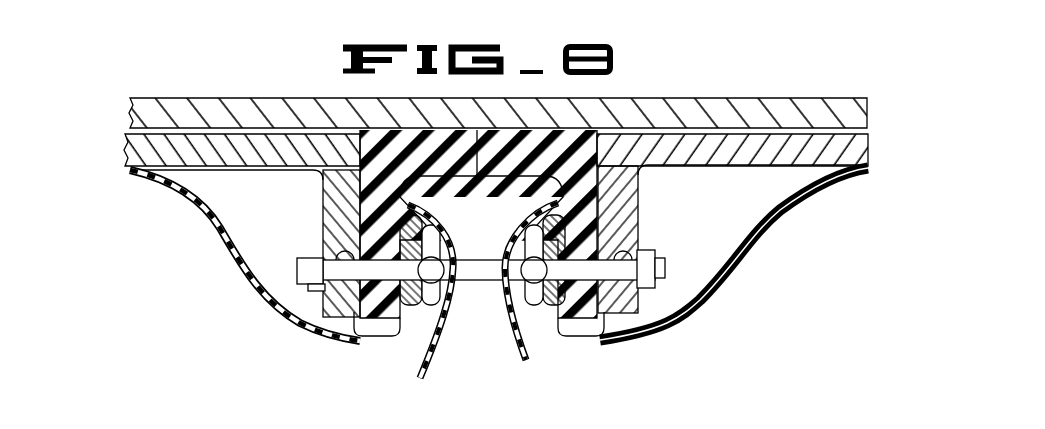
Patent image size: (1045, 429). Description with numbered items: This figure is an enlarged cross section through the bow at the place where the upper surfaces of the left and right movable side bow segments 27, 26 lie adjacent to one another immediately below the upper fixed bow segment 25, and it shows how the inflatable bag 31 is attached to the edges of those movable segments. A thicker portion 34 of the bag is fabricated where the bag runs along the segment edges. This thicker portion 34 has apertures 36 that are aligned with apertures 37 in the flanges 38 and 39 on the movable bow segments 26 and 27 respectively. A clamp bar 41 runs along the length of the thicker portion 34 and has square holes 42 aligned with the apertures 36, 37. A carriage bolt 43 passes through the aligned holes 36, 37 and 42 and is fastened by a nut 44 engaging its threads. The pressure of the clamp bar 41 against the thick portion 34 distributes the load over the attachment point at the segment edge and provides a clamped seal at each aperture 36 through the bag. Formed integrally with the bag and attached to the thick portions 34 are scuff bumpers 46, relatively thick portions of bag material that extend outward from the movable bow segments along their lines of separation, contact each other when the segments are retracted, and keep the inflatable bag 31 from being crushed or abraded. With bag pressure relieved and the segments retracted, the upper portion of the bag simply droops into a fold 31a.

The upper fixed bow segment 25 is at (745, 98).
The movable side bow segment 26 is at (128, 152).
The movable side bow segment 27 is at (867, 145).
The inflatable bag 31 is at (738, 262).
The fold 31a is at (425, 365).
The thicker portion 34 is at (362, 176).
The aperture 36 is at (386, 326).
The aperture 37 is at (322, 258).
The flange 38 is at (322, 208).
The flange 39 is at (633, 204).
The clamp bar 41 is at (543, 303).
The square hole 42 is at (520, 273).
The carriage bolt 43 is at (537, 257).
The nut 44 is at (297, 257).
The scuff bumper 46 is at (440, 182).